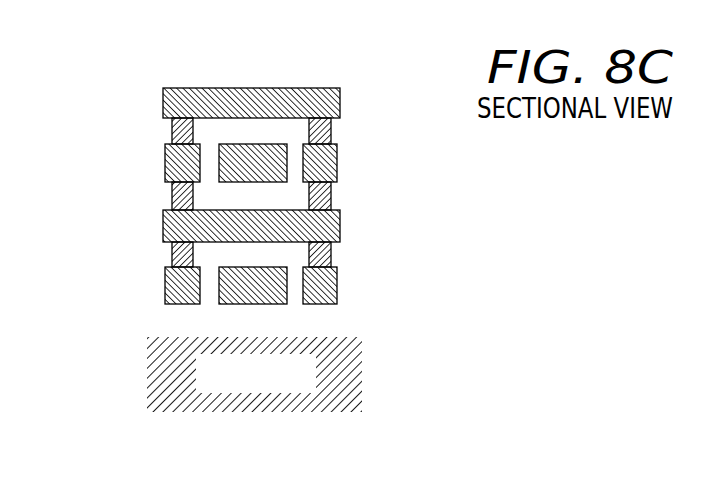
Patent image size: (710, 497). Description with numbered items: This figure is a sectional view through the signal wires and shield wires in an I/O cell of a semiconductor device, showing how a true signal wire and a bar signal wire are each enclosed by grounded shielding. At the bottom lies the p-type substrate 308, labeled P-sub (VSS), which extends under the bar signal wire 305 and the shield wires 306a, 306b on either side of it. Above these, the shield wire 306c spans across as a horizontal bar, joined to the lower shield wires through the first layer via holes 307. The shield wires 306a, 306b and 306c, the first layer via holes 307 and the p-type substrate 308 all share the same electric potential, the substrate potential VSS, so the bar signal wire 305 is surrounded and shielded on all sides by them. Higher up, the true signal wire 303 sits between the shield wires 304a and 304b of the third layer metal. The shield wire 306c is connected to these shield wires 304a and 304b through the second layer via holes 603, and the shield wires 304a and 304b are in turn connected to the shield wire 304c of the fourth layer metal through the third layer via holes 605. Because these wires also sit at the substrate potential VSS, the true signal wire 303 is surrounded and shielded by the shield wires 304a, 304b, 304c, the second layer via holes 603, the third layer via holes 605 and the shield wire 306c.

The true signal wire 303 is at (253, 144).
The shield wire 304a is at (163, 163).
The shield wire 304b is at (338, 160).
The shield wire 304c is at (251, 88).
The bar signal wire 305 is at (252, 304).
The shield wire 306a is at (165, 284).
The shield wire 306b is at (338, 285).
The shield wire 306c is at (341, 224).
The first layer via holes 307 is at (332, 256).
The p-type substrate 308 is at (362, 375).
The second layer via holes 603 is at (333, 196).
The third layer via holes 605 is at (334, 125).